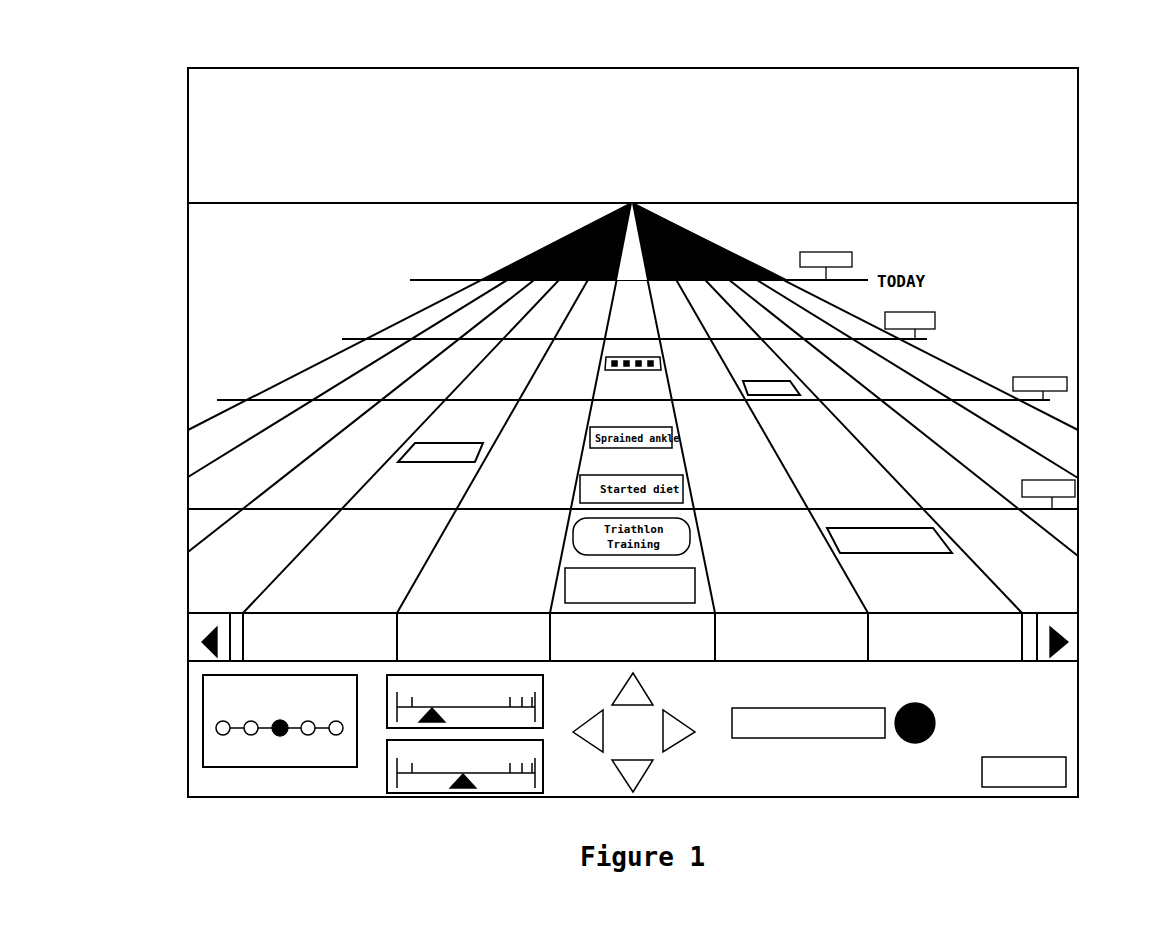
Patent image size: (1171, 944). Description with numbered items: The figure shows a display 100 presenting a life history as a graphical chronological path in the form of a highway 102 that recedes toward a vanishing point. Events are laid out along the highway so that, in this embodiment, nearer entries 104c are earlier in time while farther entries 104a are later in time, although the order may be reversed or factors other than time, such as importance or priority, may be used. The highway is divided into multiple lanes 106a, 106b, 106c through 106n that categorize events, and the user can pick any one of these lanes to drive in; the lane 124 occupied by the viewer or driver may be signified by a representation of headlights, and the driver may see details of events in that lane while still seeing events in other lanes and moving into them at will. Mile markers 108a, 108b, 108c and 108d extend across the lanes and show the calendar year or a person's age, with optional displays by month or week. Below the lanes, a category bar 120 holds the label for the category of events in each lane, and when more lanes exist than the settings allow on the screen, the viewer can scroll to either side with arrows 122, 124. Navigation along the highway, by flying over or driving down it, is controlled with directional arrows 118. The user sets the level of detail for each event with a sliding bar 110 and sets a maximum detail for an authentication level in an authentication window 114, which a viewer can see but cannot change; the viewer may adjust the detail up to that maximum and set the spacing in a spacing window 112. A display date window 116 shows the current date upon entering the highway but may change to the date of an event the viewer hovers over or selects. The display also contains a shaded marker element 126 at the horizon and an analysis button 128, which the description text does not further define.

The display 100 is at (792, 68).
The highway 102 is at (745, 260).
The farther entries 104a is at (797, 383).
The nearer entries 104c is at (695, 580).
The lane 106a is at (447, 302).
The lane 106b is at (407, 363).
The lane 106c is at (402, 420).
The lane 106n is at (940, 378).
The mile marker 108a is at (1037, 480).
The mile marker 108b is at (1028, 367).
The mile marker 108c is at (936, 304).
The mile marker 108d is at (848, 250).
The sliding bar 110 is at (390, 727).
The spacing window 112 is at (440, 782).
The authentication window 114 is at (209, 725).
The display date window 116 is at (827, 738).
The directional arrows 118 is at (675, 737).
The category bar 120 is at (187, 622).
The arrow 122 is at (205, 644).
The arrow / lane 124 is at (1068, 641).
The today marker left half 126 is at (540, 250).
The click for analysis button 128 is at (1066, 771).